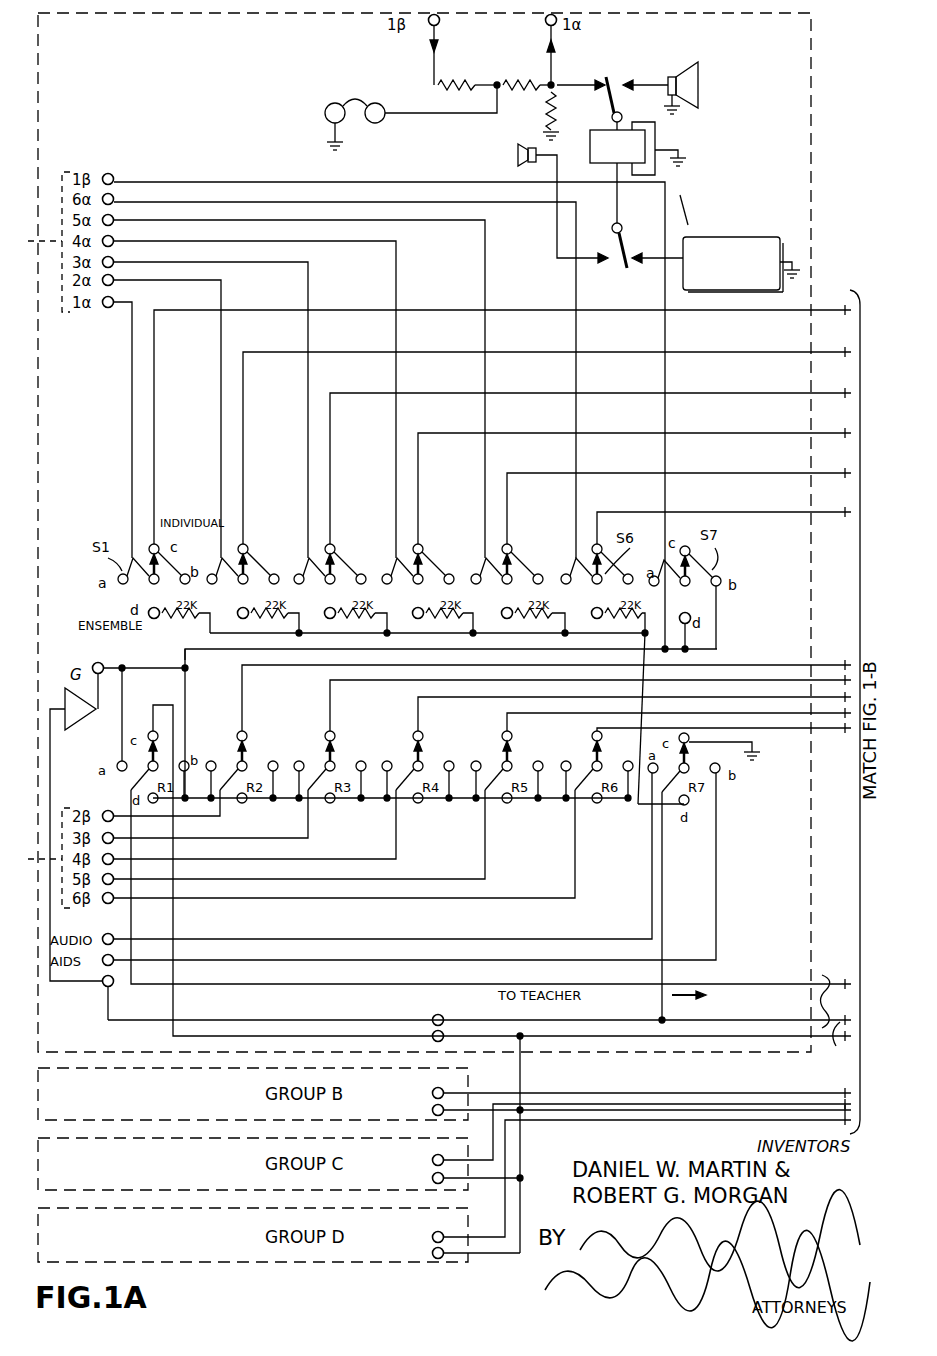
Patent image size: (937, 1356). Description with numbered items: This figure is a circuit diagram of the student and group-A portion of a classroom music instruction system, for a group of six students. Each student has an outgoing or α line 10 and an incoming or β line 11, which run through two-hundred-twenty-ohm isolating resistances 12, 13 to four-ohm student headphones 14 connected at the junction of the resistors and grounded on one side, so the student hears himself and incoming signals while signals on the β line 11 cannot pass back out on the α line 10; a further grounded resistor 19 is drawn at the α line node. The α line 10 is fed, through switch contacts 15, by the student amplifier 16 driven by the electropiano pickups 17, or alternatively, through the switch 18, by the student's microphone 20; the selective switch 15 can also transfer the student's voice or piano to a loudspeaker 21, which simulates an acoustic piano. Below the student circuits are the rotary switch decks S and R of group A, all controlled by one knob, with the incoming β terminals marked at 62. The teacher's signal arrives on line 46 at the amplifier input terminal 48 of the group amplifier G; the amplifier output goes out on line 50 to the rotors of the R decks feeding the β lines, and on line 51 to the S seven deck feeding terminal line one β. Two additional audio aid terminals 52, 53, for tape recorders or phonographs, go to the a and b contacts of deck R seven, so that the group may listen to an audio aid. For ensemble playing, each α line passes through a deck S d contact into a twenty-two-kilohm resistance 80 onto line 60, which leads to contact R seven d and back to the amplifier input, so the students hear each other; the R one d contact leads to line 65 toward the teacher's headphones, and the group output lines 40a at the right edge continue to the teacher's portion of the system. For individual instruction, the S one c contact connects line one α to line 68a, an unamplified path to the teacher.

The outgoing or α line 10 is at (556, 50).
The incoming or β line 11 is at (440, 22).
The isolating resistance 12 is at (478, 76).
The isolating resistance 13 is at (528, 78).
The student headphones 14 is at (328, 118).
The switch contacts 15 is at (617, 78).
The student amplifier 16 is at (588, 142).
The electropiano pickups 17 is at (735, 236).
The switch 18 is at (630, 248).
The resistor 19 is at (564, 115).
The student's microphone 20 is at (520, 146).
The loudspeaker 21 is at (700, 88).
The group output line 40a is at (825, 1053).
The line 46 is at (479, 988).
The amplifier input terminal 48 is at (113, 985).
The line 50 is at (422, 812).
The line 51 is at (198, 652).
The audio aid terminal 52 is at (106, 966).
The audio aid terminal 53 is at (96, 975).
The line 60 is at (322, 660).
The terminal 6β 62 is at (112, 904).
The line 65 is at (208, 986).
The line 68a is at (788, 312).
The resistance 80 is at (175, 622).